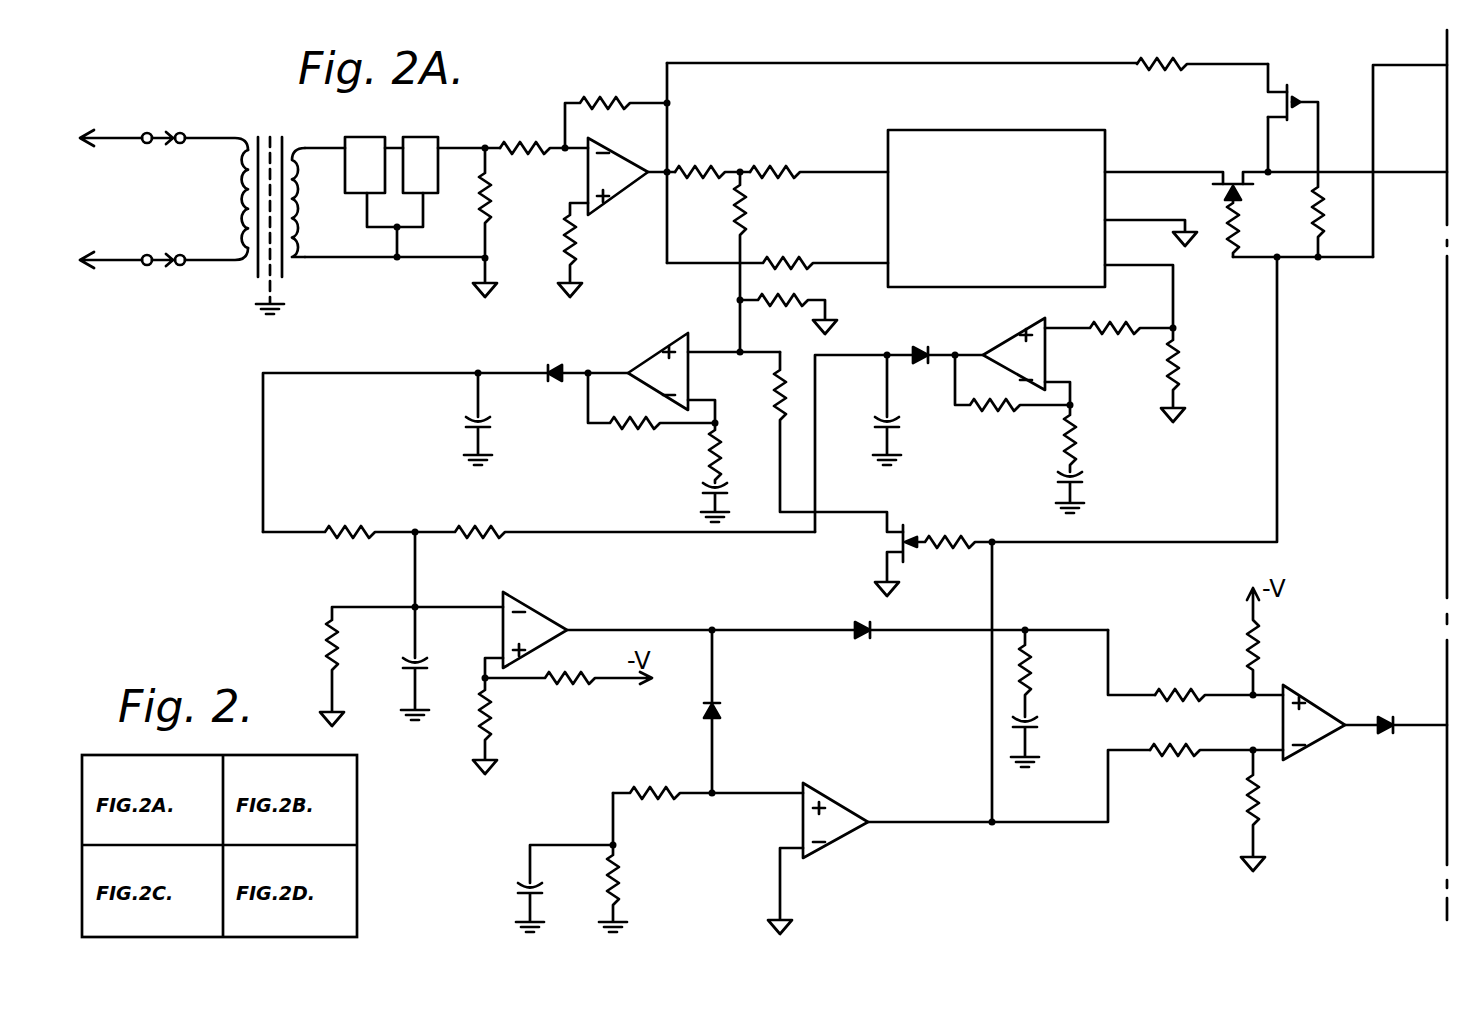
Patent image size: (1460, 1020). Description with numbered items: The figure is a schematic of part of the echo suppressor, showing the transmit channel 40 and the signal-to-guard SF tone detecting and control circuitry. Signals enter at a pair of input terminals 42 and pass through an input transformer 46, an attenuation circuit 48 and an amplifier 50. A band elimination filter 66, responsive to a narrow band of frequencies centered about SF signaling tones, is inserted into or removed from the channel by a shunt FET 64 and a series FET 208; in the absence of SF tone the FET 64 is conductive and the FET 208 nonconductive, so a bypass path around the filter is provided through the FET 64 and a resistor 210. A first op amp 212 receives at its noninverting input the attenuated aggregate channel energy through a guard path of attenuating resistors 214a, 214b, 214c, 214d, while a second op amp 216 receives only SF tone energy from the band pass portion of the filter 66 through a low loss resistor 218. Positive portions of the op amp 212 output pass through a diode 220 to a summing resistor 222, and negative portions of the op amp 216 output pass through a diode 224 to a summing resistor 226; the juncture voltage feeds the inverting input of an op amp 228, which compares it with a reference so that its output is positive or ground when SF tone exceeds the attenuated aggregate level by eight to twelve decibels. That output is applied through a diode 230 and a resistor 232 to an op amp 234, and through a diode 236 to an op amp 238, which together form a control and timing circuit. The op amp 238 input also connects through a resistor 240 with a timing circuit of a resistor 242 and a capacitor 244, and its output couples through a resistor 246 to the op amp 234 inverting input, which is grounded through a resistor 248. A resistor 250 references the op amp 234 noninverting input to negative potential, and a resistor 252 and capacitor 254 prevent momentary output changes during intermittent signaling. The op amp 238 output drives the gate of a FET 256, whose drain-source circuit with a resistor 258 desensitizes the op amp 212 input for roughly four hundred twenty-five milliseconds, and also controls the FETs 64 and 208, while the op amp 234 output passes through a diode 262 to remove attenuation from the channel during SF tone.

The transmit channel 40 is at (582, 43).
The input terminals 42 is at (163, 201).
The input transformer 46 is at (263, 200).
The attenuation circuit 48 is at (405, 172).
The amplifier 50 is at (618, 195).
The FET 64 is at (1304, 155).
The band elimination filter 66 is at (996, 193).
The FET 208 is at (1210, 184).
The resistor 210 is at (1176, 86).
The first op amp 212 is at (637, 366).
The attenuating resistor 214a is at (787, 236).
The attenuating resistor 214b is at (717, 145).
The attenuating resistor 214c is at (819, 145).
The attenuating resistor 214d is at (829, 311).
The second op amp 216 is at (1057, 354).
The resistor 218 is at (1109, 310).
The diode 220 is at (536, 351).
The resistor 222 is at (339, 512).
The diode 224 is at (954, 333).
The resistor 226 is at (615, 512).
The op amp 228 is at (561, 624).
The diode 230 is at (944, 611).
The resistor 232 is at (1214, 671).
The op amp 234 is at (1325, 708).
The diode 236 is at (761, 711).
The op amp 238 is at (850, 834).
The resistor 240 is at (687, 765).
The resistor 242 is at (655, 888).
The capacitor 244 is at (530, 888).
The resistor 246 is at (1216, 776).
The resistor 248 is at (1293, 810).
The resistor 250 is at (1296, 641).
The resistor 252 is at (1056, 673).
The capacitor 254 is at (1055, 742).
The FET 256 is at (933, 541).
The resistor 258 is at (803, 442).
The diode 262 is at (1399, 758).